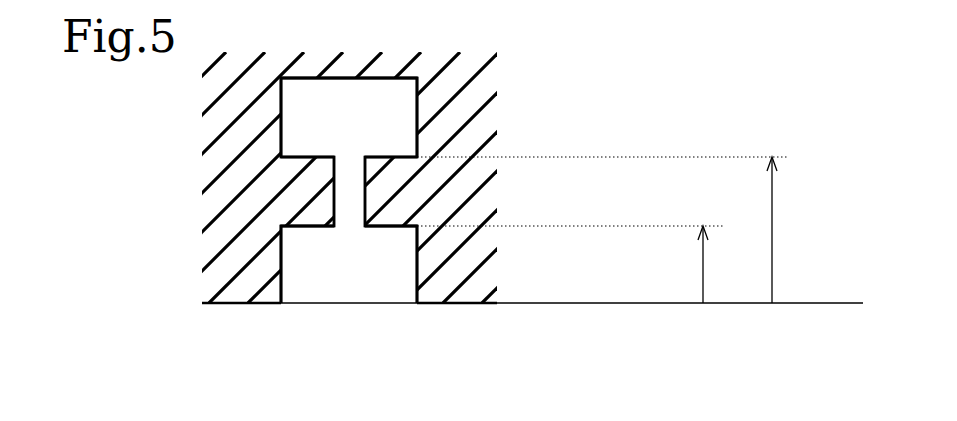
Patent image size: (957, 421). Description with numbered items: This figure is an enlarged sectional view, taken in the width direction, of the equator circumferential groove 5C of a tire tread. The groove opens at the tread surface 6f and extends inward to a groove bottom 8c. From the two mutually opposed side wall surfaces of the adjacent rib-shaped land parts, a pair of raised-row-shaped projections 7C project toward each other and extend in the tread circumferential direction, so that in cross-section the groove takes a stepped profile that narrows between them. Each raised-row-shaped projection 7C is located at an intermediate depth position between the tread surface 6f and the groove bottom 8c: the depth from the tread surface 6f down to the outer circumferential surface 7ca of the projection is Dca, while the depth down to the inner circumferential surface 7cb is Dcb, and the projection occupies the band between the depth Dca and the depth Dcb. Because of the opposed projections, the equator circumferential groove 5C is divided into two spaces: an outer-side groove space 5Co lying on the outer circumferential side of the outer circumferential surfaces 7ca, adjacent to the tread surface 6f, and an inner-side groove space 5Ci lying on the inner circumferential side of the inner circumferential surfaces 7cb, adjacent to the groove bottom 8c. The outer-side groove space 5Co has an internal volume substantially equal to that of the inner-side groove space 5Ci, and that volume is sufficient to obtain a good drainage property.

The equator circumferential groove 5C is at (347, 284).
The inner-side groove space 5Ci is at (372, 132).
The outer-side groove space 5Co is at (374, 271).
The tread surface 6f is at (238, 305).
The raised-row-shaped projection 7C is at (306, 227).
The outer circumferential surface 7ca is at (383, 227).
The inner circumferential surface 7cb is at (394, 156).
The groove bottom 8c is at (378, 80).
The depth to outer circumferential surface Dca is at (585, 264).
The depth to inner circumferential surface Dcb is at (623, 230).